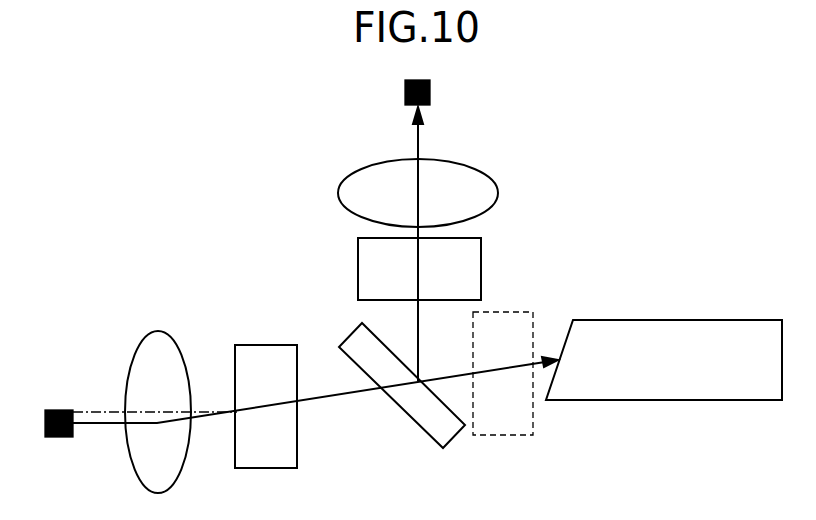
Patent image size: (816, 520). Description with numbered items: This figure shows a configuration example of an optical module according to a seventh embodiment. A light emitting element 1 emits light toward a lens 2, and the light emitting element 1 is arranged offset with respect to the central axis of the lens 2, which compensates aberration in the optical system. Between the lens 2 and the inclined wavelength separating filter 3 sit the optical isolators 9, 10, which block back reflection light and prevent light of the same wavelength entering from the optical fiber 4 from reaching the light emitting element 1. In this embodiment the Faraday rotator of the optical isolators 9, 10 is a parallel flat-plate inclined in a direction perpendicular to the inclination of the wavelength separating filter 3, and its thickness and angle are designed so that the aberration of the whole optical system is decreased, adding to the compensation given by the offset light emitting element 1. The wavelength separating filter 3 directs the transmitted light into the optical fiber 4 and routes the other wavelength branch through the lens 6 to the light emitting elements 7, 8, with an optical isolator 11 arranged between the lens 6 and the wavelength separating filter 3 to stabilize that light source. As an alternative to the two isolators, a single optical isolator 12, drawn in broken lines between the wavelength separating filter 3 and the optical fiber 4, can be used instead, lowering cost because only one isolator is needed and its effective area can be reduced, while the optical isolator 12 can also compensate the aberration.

The light emitting element 1 is at (58, 410).
The lens 2 is at (157, 330).
The wavelength separating filter 3 is at (346, 335).
The optical fiber 4 is at (625, 320).
The lens 6 is at (498, 188).
The light receiving element 7 is at (451, 92).
The light emitting element 8 is at (430, 88).
The optical isolator 9 is at (261, 380).
The optical isolator 10 is at (255, 345).
The optical isolator 11 is at (481, 265).
The optical isolator 12 is at (515, 440).